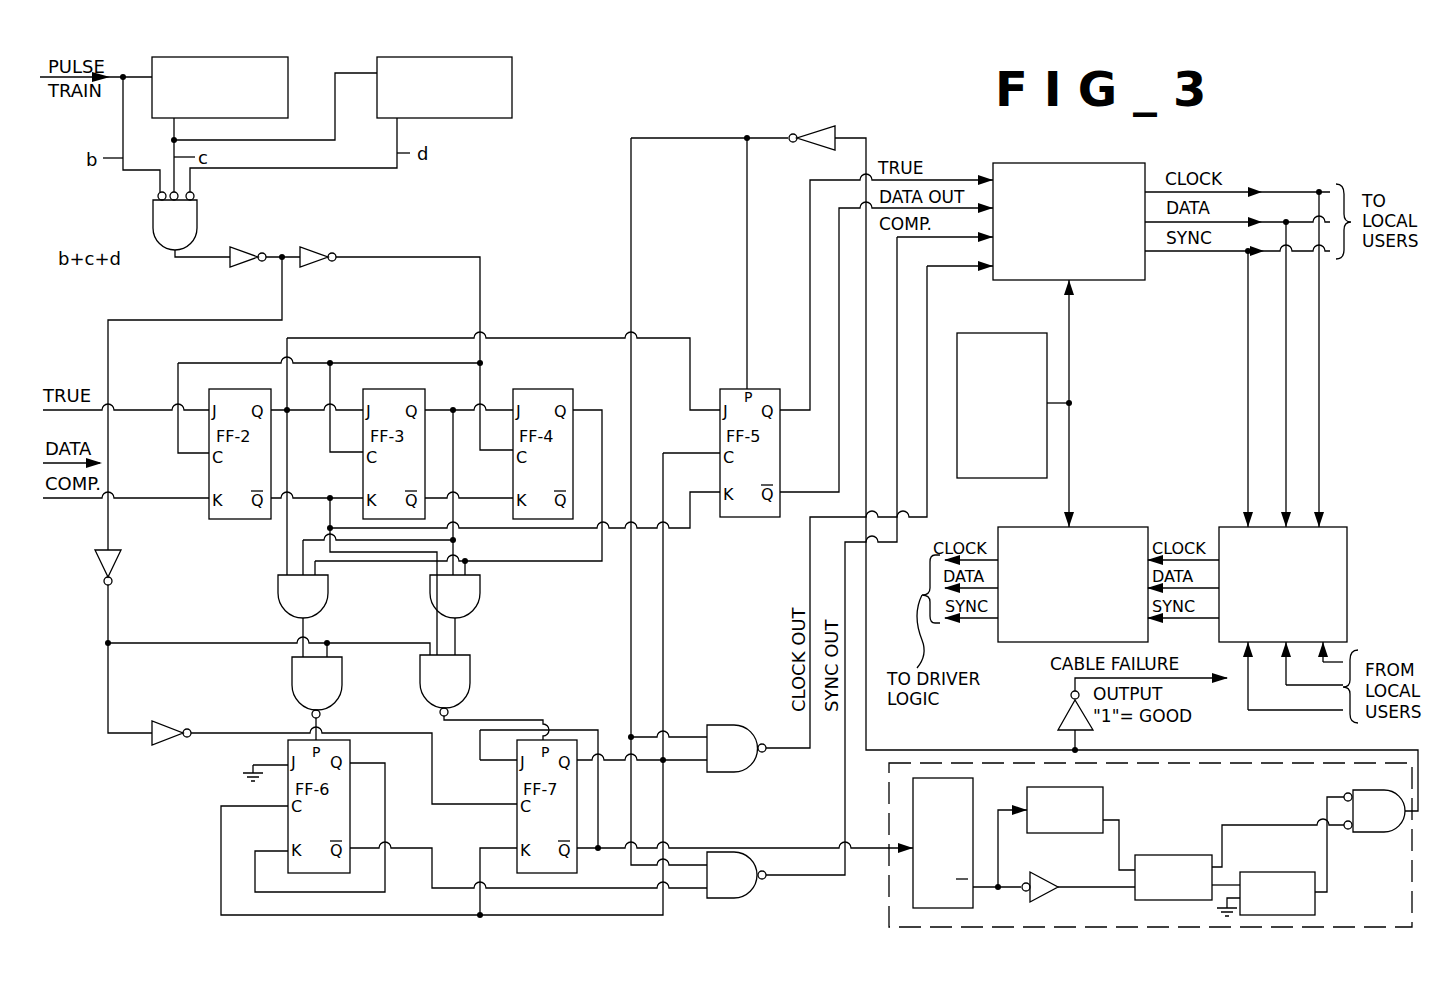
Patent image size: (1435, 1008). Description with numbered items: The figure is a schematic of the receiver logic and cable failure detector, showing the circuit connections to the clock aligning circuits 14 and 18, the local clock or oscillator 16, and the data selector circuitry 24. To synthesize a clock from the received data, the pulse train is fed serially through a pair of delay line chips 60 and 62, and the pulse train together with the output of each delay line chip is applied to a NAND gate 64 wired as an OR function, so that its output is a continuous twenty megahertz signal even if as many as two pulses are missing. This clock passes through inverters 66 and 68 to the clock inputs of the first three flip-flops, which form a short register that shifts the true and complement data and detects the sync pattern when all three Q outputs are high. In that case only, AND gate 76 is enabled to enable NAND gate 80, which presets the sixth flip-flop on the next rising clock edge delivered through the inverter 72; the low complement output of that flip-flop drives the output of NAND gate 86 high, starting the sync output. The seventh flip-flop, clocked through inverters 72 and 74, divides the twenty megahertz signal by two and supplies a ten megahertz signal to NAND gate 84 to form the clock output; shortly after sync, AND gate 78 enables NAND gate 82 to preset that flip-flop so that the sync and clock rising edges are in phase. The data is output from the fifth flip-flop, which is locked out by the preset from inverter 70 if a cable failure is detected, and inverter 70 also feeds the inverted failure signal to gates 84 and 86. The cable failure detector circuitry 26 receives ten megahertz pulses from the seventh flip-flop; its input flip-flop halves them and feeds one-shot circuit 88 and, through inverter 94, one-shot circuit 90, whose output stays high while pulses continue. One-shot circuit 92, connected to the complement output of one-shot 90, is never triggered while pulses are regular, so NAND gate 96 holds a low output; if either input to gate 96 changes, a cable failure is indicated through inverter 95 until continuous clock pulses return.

The clock aligning circuit 14 is at (1069, 162).
The local clock or oscillator 16 is at (990, 342).
The clock aligning circuit 18 is at (1100, 527).
The data selector circuitry 24 is at (1337, 527).
The cable failure detector circuitry 26 is at (888, 907).
The delay line chip 60 is at (277, 57).
The delay line chip 62 is at (503, 58).
The NAND gate 64 is at (197, 207).
The inverter 66 is at (237, 247).
The inverter 68 is at (307, 247).
The inverter 70 is at (838, 122).
The inverter 72 is at (120, 562).
The inverter 74 is at (162, 718).
The AND gate 76 is at (328, 594).
The AND gate 78 is at (480, 598).
The NAND gate 80 is at (342, 678).
The NAND gate 82 is at (470, 676).
The NAND gate 84 is at (729, 725).
The NAND gate 86 is at (759, 889).
The one-shot circuit 88 is at (1103, 792).
The one-shot circuit 90 is at (1157, 855).
The one-shot circuit 92 is at (1315, 906).
The inverter 94 is at (1048, 894).
The inverter 95 is at (1058, 715).
The NAND gate 96 is at (1380, 792).